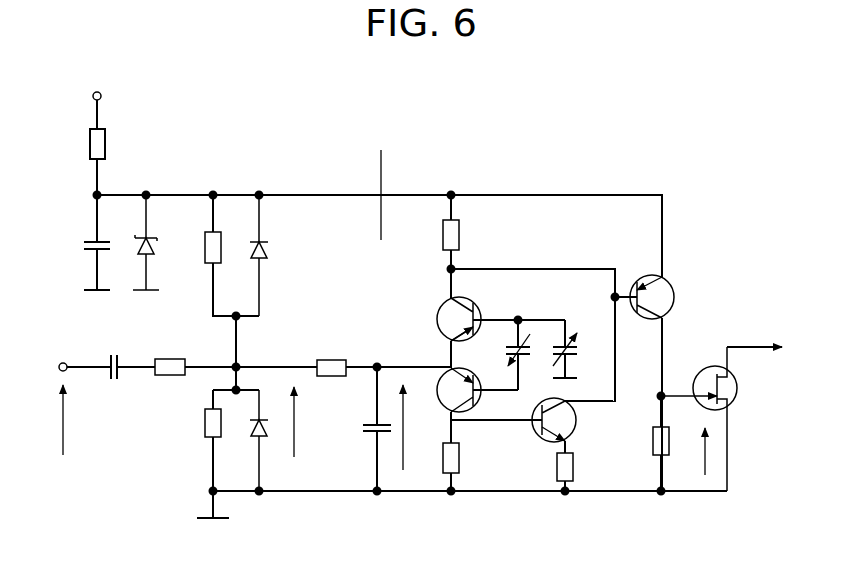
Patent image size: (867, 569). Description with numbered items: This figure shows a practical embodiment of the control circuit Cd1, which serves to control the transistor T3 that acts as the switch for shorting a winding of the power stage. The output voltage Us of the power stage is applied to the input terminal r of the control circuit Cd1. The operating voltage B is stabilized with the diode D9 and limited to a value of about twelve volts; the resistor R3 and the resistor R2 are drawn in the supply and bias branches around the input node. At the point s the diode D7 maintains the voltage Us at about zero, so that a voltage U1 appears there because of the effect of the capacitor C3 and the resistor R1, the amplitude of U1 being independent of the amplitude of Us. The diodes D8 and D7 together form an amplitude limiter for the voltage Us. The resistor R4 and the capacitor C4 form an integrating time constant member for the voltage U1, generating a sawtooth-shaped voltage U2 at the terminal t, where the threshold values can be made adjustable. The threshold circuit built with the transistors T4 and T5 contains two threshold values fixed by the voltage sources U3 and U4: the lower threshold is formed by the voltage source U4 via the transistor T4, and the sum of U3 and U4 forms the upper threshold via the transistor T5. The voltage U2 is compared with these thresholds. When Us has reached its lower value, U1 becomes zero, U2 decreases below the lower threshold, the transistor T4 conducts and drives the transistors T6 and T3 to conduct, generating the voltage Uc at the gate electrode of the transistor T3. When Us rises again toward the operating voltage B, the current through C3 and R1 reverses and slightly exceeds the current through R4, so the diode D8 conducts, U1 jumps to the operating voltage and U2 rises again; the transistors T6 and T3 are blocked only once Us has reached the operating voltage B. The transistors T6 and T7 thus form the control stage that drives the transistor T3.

The operating voltage B is at (112, 140).
The diode D9 is at (140, 241).
The diode D8 is at (269, 254).
The diode D7 is at (270, 442).
The resistor R1 is at (236, 354).
The resistor R2 is at (200, 442).
The resistor R3 is at (223, 254).
The resistor R4 is at (384, 354).
The capacitor C3 is at (128, 354).
The capacitor C4 is at (369, 431).
The control circuit Cd1 is at (382, 180).
The transistor T3 is at (721, 415).
The transistor T4 is at (469, 325).
The transistor T5 is at (489, 431).
The transistor T6 is at (662, 296).
The transistor T7 is at (572, 446).
The voltage U1 is at (309, 422).
The sawtooth voltage U2 is at (418, 427).
The voltage source U3 is at (519, 354).
The voltage source U4 is at (578, 349).
The output voltage Us is at (78, 420).
The gate voltage Uc is at (694, 451).
The input terminal r is at (79, 367).
The point s is at (236, 353).
The terminal t is at (395, 356).